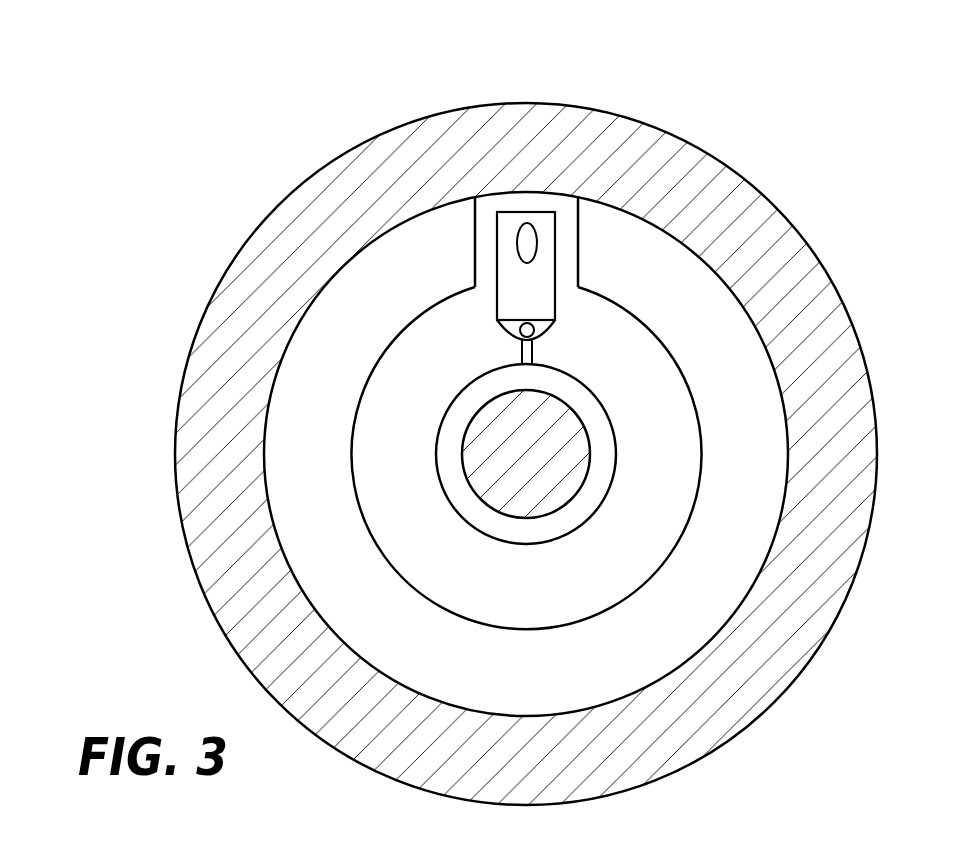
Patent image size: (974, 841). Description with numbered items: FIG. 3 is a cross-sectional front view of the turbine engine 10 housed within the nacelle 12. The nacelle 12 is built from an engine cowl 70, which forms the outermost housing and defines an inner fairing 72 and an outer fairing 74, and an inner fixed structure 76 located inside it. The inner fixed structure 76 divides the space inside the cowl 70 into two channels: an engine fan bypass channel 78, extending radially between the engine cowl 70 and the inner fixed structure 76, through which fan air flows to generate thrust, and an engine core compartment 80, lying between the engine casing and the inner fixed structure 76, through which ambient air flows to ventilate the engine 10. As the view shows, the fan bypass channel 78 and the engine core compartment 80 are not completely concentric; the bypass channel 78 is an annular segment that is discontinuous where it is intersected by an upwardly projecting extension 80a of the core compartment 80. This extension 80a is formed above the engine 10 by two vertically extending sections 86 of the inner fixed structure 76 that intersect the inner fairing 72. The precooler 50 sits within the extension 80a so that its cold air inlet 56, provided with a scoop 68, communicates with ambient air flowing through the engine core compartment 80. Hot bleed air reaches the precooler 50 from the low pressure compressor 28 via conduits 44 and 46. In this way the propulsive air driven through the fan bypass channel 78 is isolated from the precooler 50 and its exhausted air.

The turbine engine 10 is at (467, 477).
The nacelle 12 is at (786, 121).
The low pressure compressor 28 is at (448, 439).
The conduit 44 is at (534, 332).
The conduit 46 is at (520, 350).
The precooler 50 is at (542, 300).
The cold air inlet 56 is at (475, 243).
The scoop 68 is at (533, 240).
The engine cowl 70 is at (790, 240).
The inner fairing 72 is at (786, 408).
The outer fairing 74 is at (855, 327).
The inner fixed structure 76 is at (700, 481).
The engine fan bypass channel 78 is at (542, 683).
The engine core compartment 80 is at (542, 598).
The extension 80a is at (481, 216).
The vertically extending sections 86 is at (579, 243).